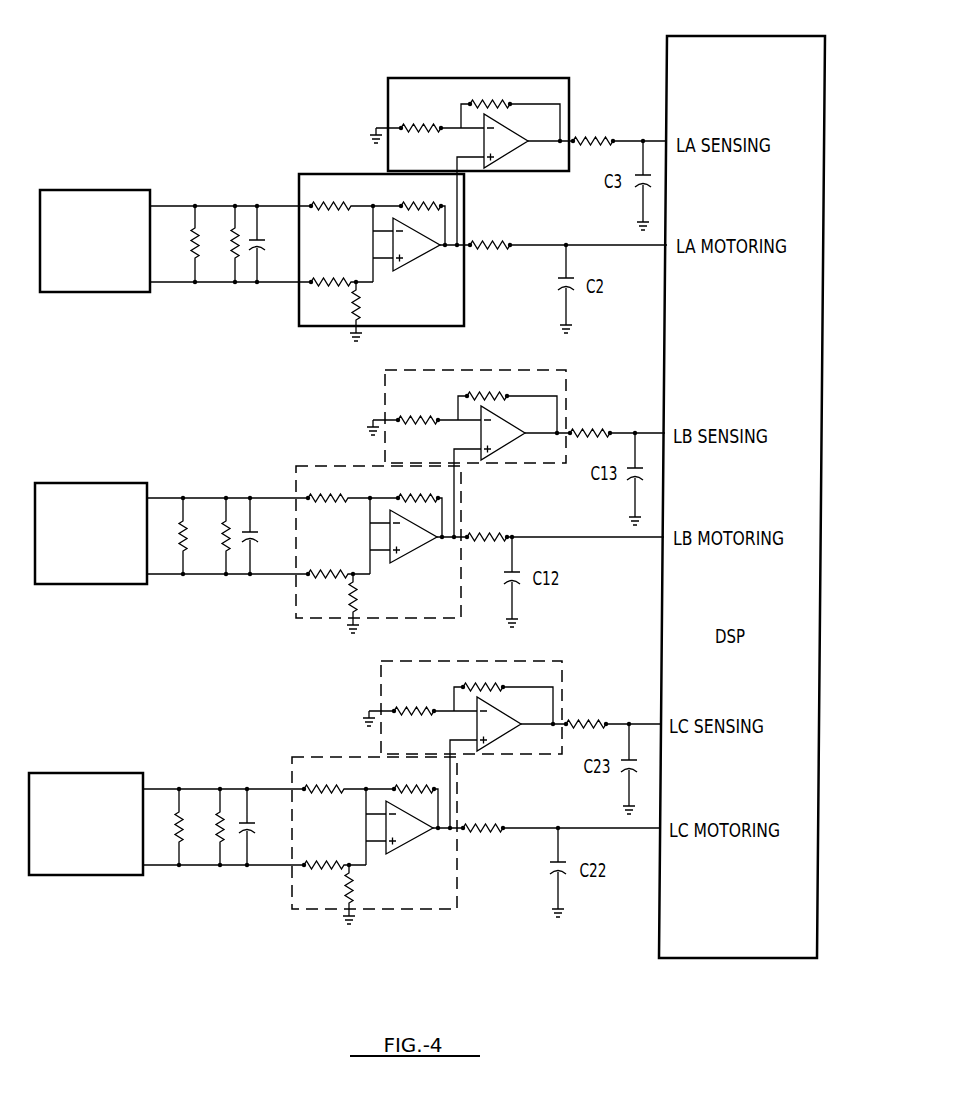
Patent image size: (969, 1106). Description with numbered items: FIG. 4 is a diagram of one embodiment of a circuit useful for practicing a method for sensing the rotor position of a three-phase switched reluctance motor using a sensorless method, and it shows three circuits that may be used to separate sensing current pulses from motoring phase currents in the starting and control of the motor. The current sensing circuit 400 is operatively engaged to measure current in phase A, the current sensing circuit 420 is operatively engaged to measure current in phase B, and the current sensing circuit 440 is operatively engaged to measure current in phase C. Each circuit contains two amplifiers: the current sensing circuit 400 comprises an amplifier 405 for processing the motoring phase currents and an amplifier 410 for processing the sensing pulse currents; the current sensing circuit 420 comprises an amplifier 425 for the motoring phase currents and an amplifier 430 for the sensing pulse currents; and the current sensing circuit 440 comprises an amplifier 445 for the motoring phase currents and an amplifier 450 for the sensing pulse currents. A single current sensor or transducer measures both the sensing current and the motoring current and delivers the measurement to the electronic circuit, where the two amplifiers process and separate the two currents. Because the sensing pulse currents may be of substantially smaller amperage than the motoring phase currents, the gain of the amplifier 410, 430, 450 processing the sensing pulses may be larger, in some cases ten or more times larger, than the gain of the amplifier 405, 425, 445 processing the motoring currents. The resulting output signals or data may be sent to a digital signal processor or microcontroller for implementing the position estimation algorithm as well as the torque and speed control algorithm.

The current sensing circuit 400 is at (177, 112).
The amplifier 405 is at (340, 170).
The amplifier 410 is at (503, 77).
The current sensing circuit 420 is at (200, 477).
The amplifier 425 is at (318, 463).
The amplifier 430 is at (385, 386).
The current sensing circuit 440 is at (193, 763).
The amplifier 445 is at (313, 757).
The amplifier 450 is at (382, 663).